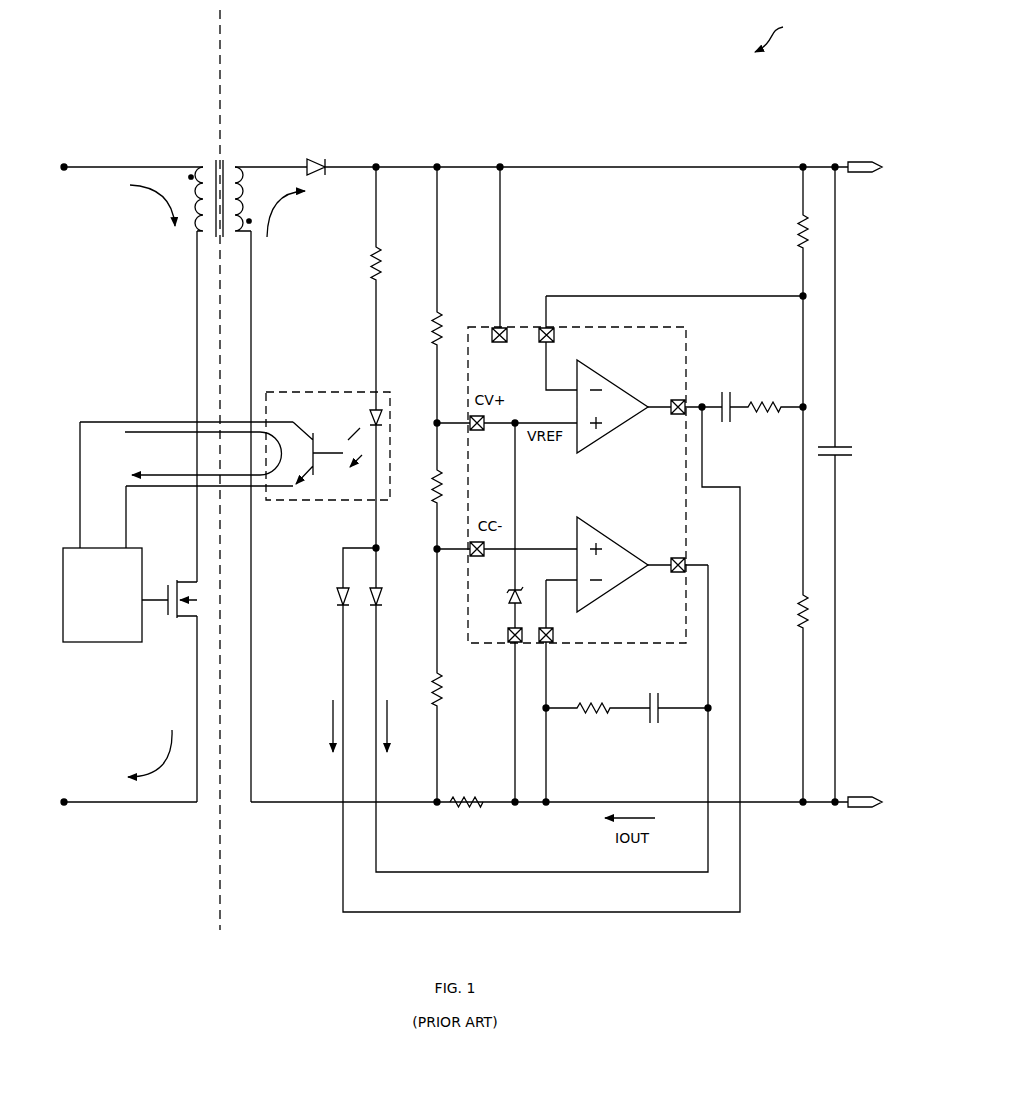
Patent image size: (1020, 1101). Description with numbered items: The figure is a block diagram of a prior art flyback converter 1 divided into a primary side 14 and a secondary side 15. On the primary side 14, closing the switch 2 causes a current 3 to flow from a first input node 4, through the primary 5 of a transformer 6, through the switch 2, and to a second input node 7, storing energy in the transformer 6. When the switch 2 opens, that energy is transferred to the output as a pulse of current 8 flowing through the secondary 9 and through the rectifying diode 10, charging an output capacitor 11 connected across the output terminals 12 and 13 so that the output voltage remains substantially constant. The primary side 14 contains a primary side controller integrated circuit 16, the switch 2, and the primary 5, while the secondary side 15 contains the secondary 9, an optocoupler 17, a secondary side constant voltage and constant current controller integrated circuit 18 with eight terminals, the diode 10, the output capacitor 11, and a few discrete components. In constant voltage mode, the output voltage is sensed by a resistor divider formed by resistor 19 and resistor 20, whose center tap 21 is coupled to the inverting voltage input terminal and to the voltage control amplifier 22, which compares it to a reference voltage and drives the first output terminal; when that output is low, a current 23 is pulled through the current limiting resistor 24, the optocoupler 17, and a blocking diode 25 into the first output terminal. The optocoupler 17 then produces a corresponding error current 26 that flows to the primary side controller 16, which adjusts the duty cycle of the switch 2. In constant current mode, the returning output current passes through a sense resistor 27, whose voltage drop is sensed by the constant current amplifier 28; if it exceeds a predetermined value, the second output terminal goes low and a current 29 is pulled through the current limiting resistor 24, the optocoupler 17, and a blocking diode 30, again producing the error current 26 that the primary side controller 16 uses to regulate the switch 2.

The flyback converter 1 is at (778, 34).
The switch 2 is at (179, 578).
The current 3 is at (151, 481).
The first input node 4 is at (88, 167).
The primary 5 is at (203, 167).
The transformer 6 is at (230, 146).
The second input node 7 is at (71, 800).
The pulse of current 8 is at (286, 214).
The secondary 9 is at (240, 167).
The diode 10 is at (315, 159).
The output capacitor 11 is at (843, 446).
The output terminal 12 is at (861, 173).
The output terminal 13 is at (857, 796).
The primary side 14 is at (142, 38).
The secondary side 15 is at (530, 40).
The primary side controller integrated circuit 16 is at (100, 548).
The optocoupler 17 is at (308, 392).
The secondary side constant voltage and constant current controller integrated circu 18 is at (688, 357).
The resistor 19 is at (796, 235).
The resistor 20 is at (797, 616).
The center tap 21 is at (801, 294).
The voltage control amplifier 22 is at (620, 382).
The current 23 is at (321, 726).
The current limiting resistor 24 is at (382, 262).
The blocking diode 25 is at (332, 589).
The error current 26 is at (203, 453).
The sense resistor 27 is at (466, 800).
The constant current amplifier 28 is at (618, 539).
The current 29 is at (398, 726).
The blocking diode 30 is at (385, 589).